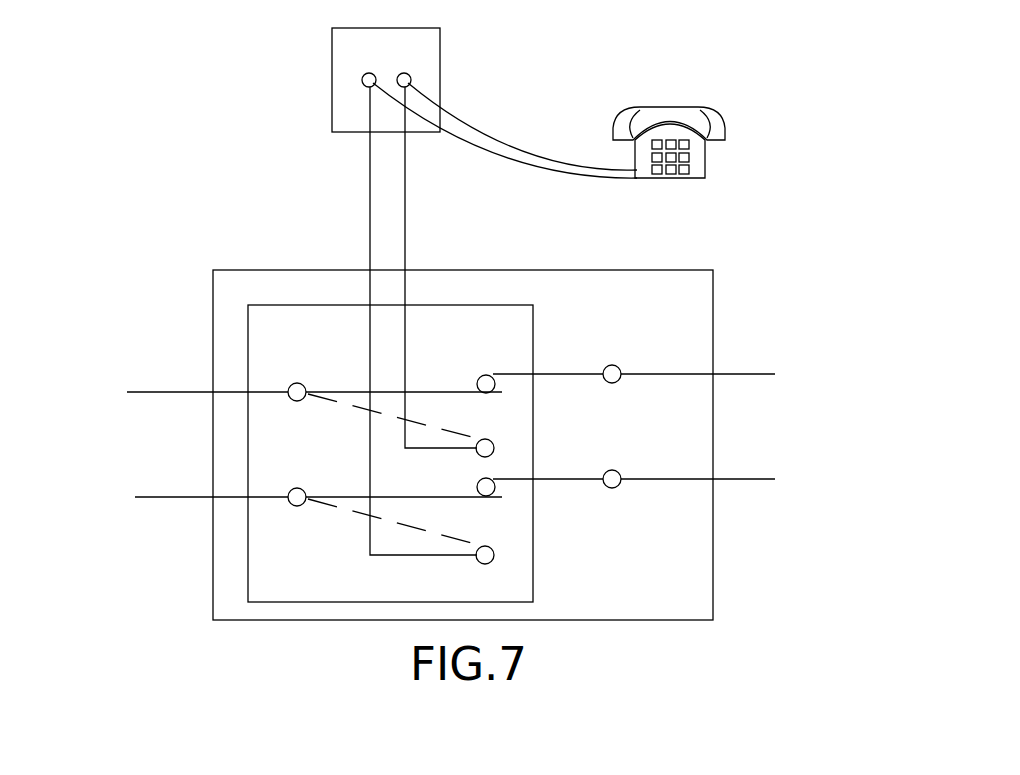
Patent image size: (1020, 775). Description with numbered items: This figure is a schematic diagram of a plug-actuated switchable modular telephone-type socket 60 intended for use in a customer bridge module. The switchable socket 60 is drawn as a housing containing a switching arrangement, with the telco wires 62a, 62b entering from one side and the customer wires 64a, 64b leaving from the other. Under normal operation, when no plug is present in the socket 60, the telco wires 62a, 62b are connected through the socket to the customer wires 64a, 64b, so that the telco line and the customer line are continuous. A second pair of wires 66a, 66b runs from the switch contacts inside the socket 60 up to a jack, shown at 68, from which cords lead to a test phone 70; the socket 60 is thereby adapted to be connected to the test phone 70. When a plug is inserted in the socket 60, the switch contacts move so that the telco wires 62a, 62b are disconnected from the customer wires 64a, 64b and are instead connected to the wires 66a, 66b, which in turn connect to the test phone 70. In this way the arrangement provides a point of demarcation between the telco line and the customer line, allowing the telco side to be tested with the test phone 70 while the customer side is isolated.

The switchable socket 60 is at (713, 269).
The telco wire 62a is at (277, 405).
The telco wire 62b is at (284, 513).
The customer wire 64a is at (667, 373).
The customer wire 64b is at (667, 478).
The wire 66a is at (407, 208).
The wire 66b is at (370, 207).
The wall jack 68 is at (332, 80).
The test phone 70 is at (667, 107).